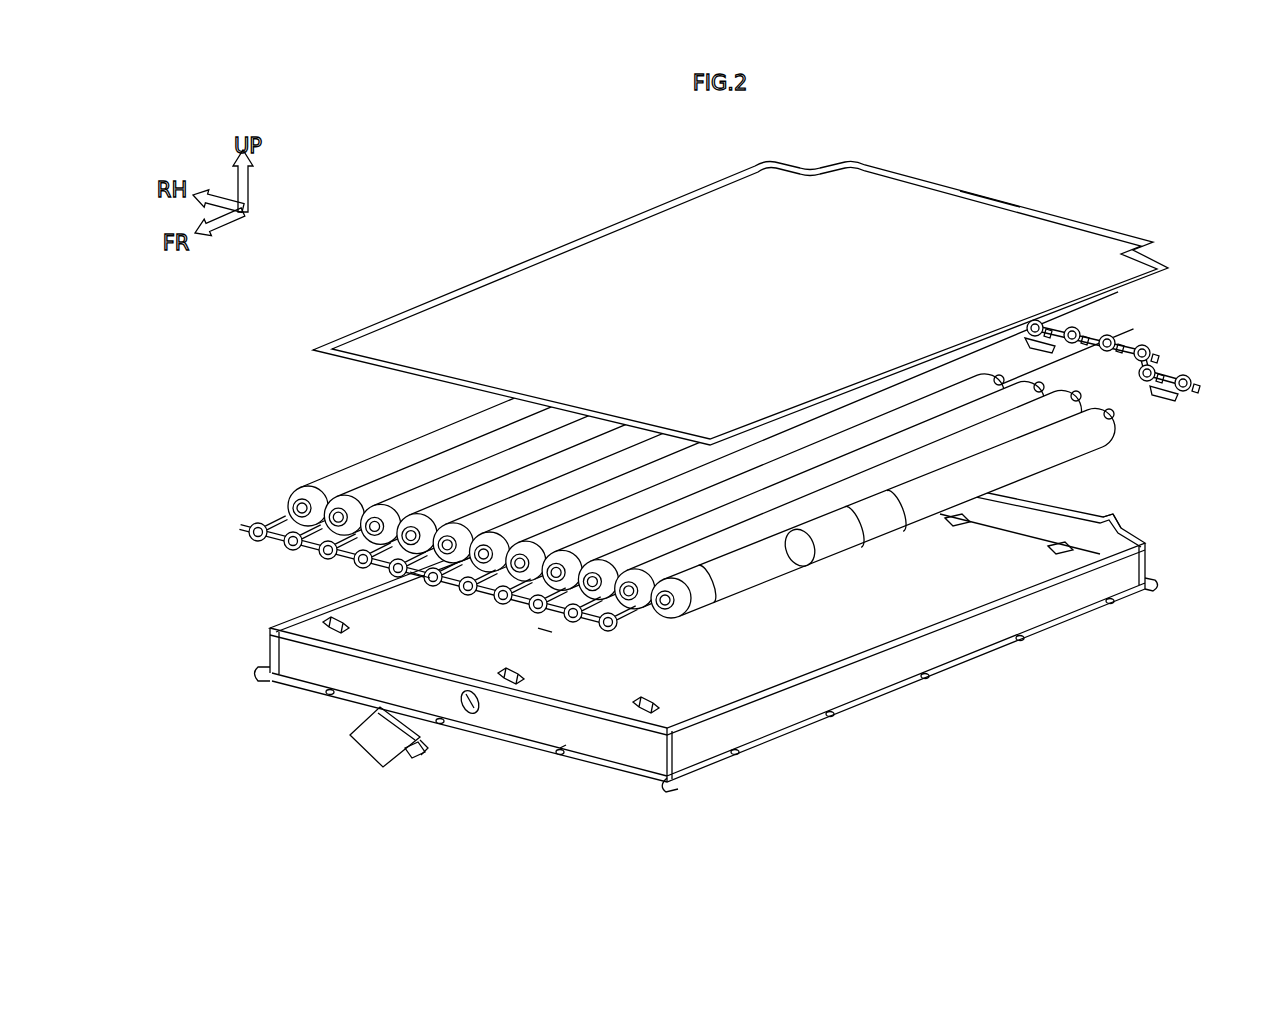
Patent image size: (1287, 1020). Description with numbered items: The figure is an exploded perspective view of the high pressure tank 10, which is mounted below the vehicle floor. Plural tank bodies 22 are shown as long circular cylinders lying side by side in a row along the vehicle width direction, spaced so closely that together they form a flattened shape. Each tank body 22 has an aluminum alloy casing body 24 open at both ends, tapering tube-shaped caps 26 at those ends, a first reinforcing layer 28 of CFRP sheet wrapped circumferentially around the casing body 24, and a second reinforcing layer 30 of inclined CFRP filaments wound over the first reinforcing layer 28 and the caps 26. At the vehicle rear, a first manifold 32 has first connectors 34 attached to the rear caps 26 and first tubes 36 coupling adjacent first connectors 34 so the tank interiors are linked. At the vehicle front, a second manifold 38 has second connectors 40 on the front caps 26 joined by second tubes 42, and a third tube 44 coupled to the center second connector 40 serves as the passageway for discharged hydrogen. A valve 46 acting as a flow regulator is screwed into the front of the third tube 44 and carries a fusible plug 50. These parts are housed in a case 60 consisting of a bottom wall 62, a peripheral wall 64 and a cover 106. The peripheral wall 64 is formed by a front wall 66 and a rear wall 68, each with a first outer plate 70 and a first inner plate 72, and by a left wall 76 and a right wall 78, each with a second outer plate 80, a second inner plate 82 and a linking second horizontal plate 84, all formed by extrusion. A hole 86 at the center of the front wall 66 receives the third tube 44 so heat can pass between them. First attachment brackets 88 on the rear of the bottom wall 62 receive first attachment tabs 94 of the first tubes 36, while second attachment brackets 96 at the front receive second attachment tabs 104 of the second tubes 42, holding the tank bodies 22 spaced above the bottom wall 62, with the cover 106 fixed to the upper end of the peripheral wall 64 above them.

The high pressure tank 10 is at (313, 291).
The tank body 22 is at (415, 438).
The casing body 24 is at (856, 552).
The cap 26 is at (303, 498).
The first reinforcing layer 28 is at (870, 527).
The second reinforcing layer 30 is at (906, 514).
The first manifold 32 is at (1109, 332).
The first connector 34 is at (1038, 320).
The first tube 36 is at (1072, 327).
The second manifold 38 is at (545, 633).
The second connector 40 is at (419, 575).
The second tube 42 is at (258, 522).
The third tube 44 is at (420, 576).
The valve 46 is at (368, 738).
The fusible plug 50 is at (425, 752).
The case 60 is at (740, 286).
The bottom wall 62 is at (718, 637).
The peripheral wall 64 is at (1160, 542).
The front wall 66 is at (563, 748).
The rear wall 68 is at (1102, 500).
The first outer plate 70 is at (522, 725).
The first inner plate 72 is at (640, 704).
The left wall 76 is at (858, 688).
The right wall 78 is at (305, 607).
The second outer plate 80 is at (268, 628).
The second inner plate 82 is at (400, 645).
The second horizontal plate 84 is at (258, 672).
The hole 86 is at (472, 716).
The first attachment bracket 88 is at (958, 538).
The first attachment tab 94 is at (1040, 340).
The second attachment bracket 96 is at (338, 630).
The second attachment tab 104 is at (275, 545).
The cover 106 is at (990, 200).